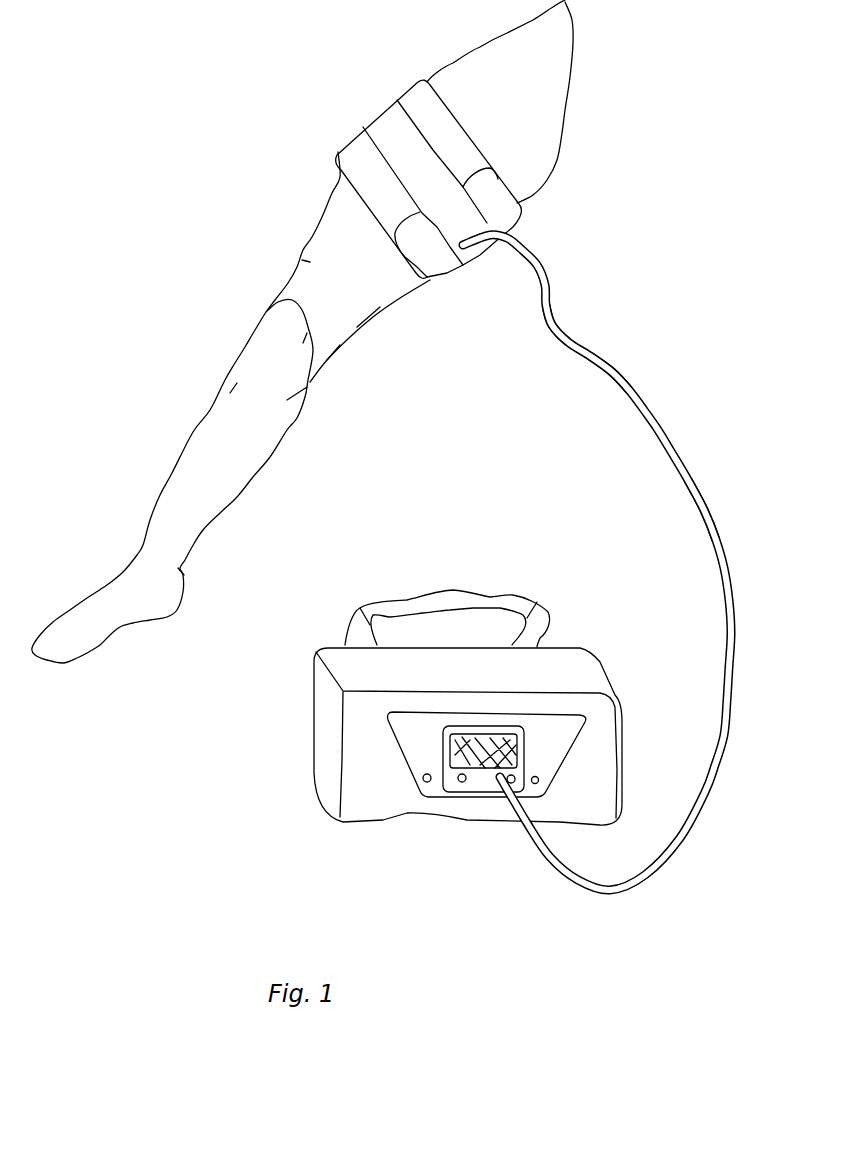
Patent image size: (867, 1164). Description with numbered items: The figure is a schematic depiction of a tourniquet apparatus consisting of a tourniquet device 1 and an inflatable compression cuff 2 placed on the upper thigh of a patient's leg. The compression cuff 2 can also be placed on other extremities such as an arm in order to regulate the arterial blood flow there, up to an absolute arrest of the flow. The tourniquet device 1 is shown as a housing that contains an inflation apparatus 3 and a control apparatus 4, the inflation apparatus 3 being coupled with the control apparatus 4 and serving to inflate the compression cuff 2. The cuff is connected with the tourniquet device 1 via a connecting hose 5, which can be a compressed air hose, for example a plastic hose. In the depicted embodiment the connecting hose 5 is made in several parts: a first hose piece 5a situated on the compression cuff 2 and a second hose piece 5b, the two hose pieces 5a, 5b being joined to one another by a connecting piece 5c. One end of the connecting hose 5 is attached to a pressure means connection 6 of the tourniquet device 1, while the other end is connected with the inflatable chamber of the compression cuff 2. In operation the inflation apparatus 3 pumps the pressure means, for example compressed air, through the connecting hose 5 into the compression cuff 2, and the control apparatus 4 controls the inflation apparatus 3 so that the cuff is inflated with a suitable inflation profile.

The tourniquet device 1 is at (493, 719).
The compression cuff 2 is at (501, 214).
The inflation apparatus 3 is at (383, 780).
The control apparatus 4 is at (605, 756).
The connecting hose 5 is at (624, 562).
The first hose piece 5a is at (581, 342).
The second hose piece 5b is at (721, 535).
The connecting piece 5c is at (628, 386).
The pressure means connection 6 is at (500, 777).